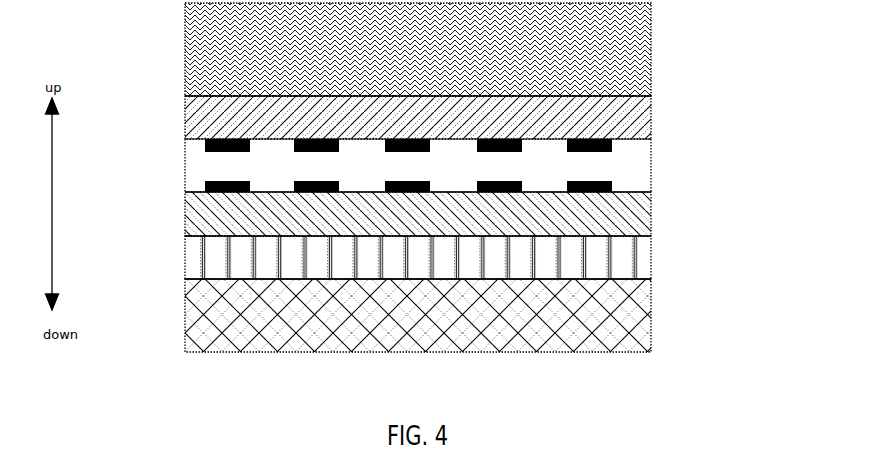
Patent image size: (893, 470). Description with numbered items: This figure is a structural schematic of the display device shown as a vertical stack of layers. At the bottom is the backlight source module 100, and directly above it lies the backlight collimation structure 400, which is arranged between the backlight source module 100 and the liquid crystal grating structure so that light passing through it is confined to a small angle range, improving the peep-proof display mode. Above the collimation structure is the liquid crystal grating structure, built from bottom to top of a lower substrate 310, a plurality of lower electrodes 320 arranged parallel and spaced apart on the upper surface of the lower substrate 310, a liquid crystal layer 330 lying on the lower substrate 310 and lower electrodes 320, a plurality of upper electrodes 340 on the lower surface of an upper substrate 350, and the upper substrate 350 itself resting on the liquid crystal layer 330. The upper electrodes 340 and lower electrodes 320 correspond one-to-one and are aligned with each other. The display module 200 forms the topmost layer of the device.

The backlight source module 100 is at (651, 318).
The display module 200 is at (651, 55).
The lower substrate 310 is at (651, 212).
The lower electrodes 320 is at (185, 193).
The liquid crystal layer 330 is at (651, 164).
The upper electrodes 340 is at (185, 153).
The upper substrate 350 is at (651, 118).
The backlight collimation structure 400 is at (651, 267).